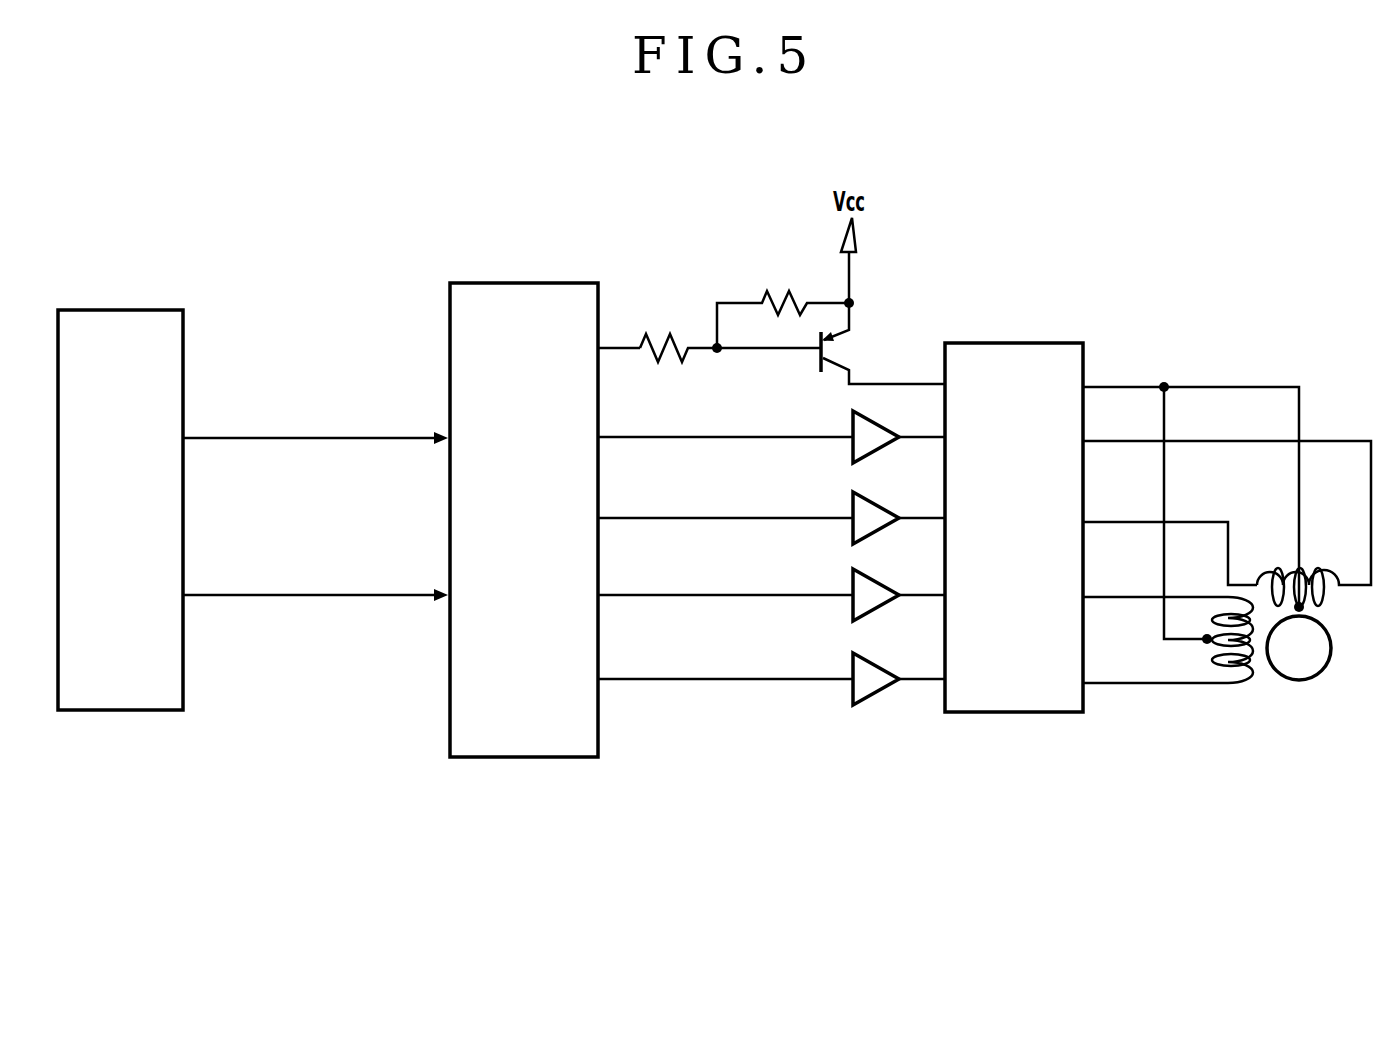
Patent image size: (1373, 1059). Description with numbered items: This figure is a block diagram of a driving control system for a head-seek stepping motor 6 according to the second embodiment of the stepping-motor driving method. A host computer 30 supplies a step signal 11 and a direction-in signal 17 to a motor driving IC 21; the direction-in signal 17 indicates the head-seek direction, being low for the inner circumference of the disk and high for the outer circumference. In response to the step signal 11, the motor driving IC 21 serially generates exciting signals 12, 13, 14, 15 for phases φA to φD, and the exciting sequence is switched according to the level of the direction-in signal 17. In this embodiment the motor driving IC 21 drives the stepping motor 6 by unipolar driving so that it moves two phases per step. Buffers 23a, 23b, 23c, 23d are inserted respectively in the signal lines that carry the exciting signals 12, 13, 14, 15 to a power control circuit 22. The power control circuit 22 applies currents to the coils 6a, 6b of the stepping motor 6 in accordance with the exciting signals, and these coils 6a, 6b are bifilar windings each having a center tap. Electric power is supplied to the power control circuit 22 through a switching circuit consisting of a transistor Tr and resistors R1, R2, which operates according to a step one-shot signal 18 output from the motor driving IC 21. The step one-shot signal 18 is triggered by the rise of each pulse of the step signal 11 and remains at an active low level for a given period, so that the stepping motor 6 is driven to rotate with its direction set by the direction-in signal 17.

The host computer 30 is at (160, 310).
The step signal 11 is at (320, 437).
The direction-in signal 17 is at (378, 594).
The motor driving IC 21 is at (487, 283).
The step one-shot signal 18 is at (618, 346).
The resistor R1 is at (776, 292).
The resistor R2 is at (674, 338).
The transistor Tr is at (838, 350).
The exciting signal 12 is at (658, 437).
The exciting signal 13 is at (658, 518).
The exciting signal 14 is at (658, 595).
The exciting signal 15 is at (658, 679).
The buffer 23a is at (851, 427).
The buffer 23b is at (851, 505).
The buffer 23c is at (851, 585).
The buffer 23d is at (851, 668).
The power control circuit 22 is at (1045, 343).
The coil 6a is at (1323, 556).
The coil 6b is at (1228, 693).
The stepping motor 6 is at (1299, 681).